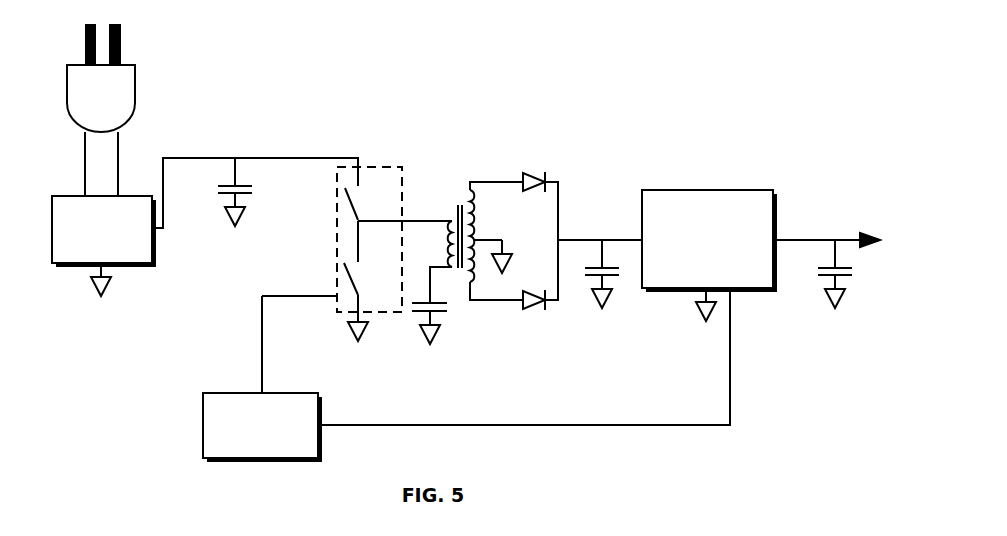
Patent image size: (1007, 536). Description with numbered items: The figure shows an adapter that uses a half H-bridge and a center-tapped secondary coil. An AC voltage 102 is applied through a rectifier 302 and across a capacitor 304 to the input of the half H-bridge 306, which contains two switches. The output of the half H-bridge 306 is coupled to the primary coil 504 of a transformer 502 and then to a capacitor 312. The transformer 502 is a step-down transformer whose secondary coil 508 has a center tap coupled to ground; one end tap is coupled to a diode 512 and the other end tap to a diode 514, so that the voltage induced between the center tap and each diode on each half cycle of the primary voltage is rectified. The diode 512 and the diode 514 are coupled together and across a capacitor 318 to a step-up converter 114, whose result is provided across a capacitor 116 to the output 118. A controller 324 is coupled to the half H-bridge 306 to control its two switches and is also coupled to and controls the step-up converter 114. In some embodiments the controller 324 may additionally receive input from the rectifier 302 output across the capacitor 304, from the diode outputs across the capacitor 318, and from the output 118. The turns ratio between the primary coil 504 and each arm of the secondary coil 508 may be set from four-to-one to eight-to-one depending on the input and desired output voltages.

The AC voltage 102 is at (140, 82).
The rectifier 302 is at (103, 246).
The capacitor 304 is at (220, 175).
The half H-bridge 306 is at (337, 225).
The transformer 502 is at (449, 170).
The primary coil 504 is at (442, 202).
The secondary coil 508 is at (467, 185).
The capacitor 312 is at (410, 320).
The diode 512 is at (542, 165).
The diode 514 is at (523, 320).
The capacitor 318 is at (610, 283).
The step-up converter 114 is at (708, 255).
The output 118 is at (870, 222).
The capacitor 116 is at (817, 285).
The controller 324 is at (261, 426).